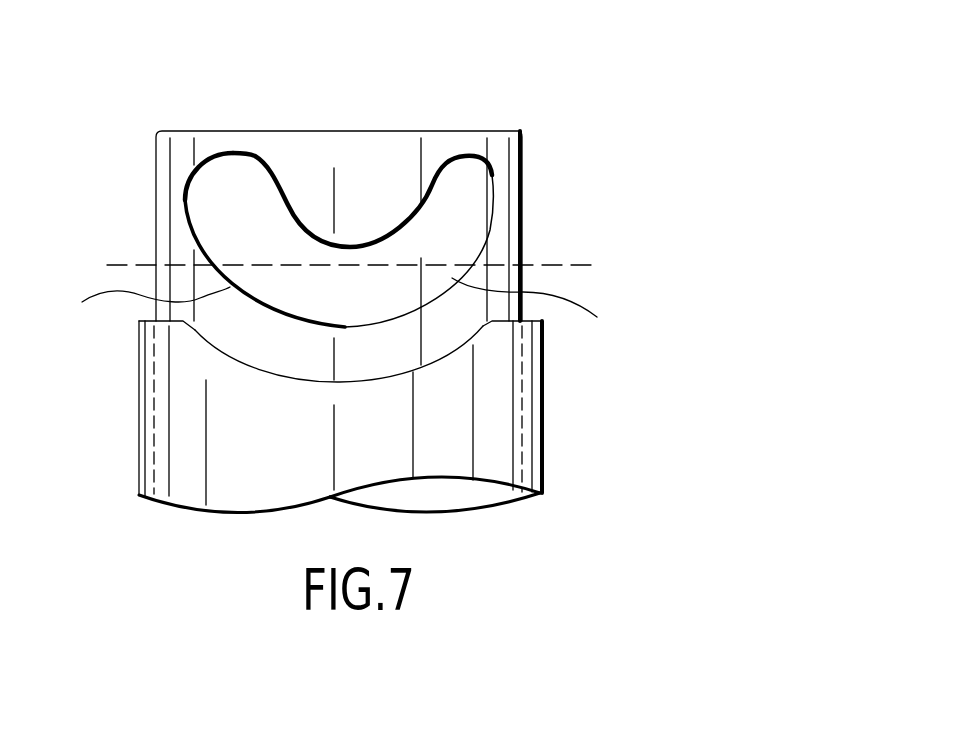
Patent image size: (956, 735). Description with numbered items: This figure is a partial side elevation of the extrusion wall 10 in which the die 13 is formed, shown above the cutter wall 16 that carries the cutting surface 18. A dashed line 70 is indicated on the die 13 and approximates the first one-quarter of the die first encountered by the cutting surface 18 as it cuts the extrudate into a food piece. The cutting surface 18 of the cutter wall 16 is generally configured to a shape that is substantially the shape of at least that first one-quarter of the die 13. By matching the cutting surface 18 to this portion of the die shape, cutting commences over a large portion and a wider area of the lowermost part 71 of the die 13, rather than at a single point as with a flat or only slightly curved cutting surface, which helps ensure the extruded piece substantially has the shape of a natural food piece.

The extrusion wall 10 is at (266, 131).
The die 13 is at (350, 246).
The cutter wall 16 is at (542, 411).
The cutting surface 18 is at (342, 383).
The dashed line 70 is at (600, 264).
The lowermost part of the die 71 is at (336, 306).